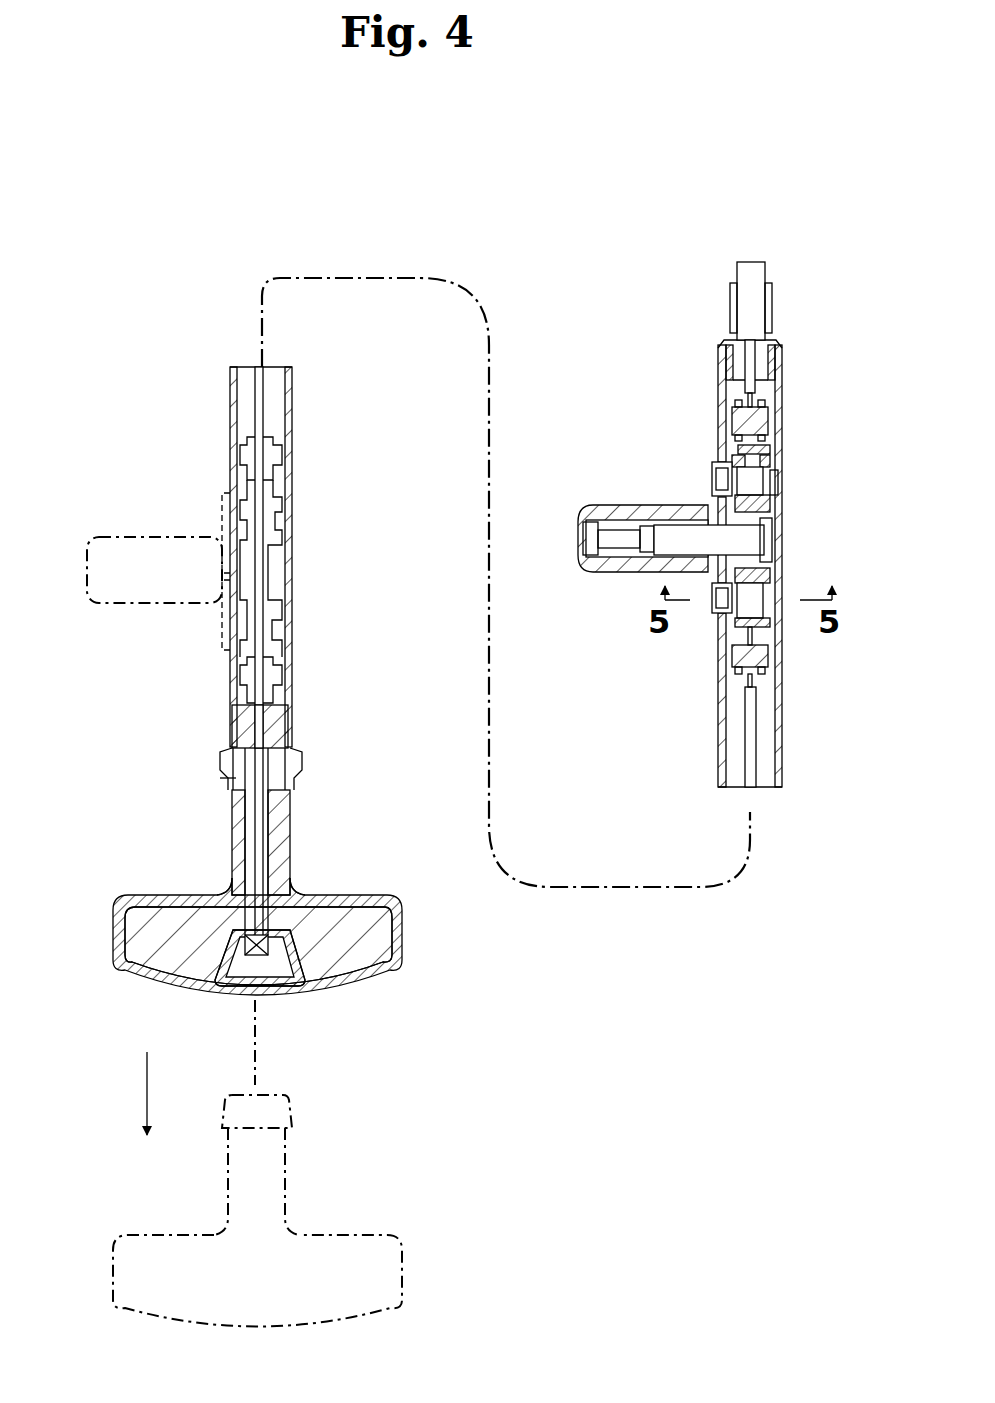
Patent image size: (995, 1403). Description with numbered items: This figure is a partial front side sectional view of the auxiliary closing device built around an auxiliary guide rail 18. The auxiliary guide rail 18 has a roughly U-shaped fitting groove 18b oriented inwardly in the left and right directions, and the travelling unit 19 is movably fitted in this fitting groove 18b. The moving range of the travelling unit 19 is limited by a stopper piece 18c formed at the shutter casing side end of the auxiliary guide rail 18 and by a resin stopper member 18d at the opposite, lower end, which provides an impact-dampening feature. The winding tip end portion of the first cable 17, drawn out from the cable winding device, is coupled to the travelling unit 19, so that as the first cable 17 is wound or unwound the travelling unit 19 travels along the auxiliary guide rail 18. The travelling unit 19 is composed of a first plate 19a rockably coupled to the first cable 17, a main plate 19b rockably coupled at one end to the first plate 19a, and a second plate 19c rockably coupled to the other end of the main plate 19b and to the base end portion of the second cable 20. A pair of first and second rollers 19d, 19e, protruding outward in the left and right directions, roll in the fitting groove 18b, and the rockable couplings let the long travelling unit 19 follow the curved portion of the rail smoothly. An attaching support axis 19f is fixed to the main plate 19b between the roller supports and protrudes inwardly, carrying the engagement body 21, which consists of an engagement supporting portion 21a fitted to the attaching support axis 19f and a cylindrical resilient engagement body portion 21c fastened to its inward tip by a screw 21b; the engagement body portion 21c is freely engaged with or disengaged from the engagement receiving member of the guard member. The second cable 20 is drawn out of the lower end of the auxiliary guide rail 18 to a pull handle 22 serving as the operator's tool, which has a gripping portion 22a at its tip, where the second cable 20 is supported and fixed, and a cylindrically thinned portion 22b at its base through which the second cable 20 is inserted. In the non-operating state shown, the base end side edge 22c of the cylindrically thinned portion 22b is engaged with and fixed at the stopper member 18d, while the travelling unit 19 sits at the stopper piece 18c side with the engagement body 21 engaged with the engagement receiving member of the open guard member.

The first cable 17 is at (717, 367).
The auxiliary guide rail 18 is at (310, 450).
The fitting groove 18b is at (766, 795).
The stopper piece 18c is at (777, 350).
The stopper member 18d is at (262, 745).
The travelling unit 19 is at (765, 393).
The first plate 19a is at (778, 442).
The main plate 19b is at (777, 515).
The second plate 19c is at (717, 657).
The first roller 19d is at (777, 450).
The second roller 19e is at (777, 557).
The attaching support axis 19f is at (696, 507).
The second cable 20 is at (272, 532).
The engagement body 21 is at (143, 597).
The engagement supporting portion 21a is at (655, 507).
The screw 21b is at (595, 568).
The engagement body portion 21c is at (620, 568).
The pull handle 22 is at (284, 1037).
The gripping portion 22a is at (396, 938).
The cylindrically thinned portion 22b is at (280, 828).
The base end side edge 22c is at (228, 774).